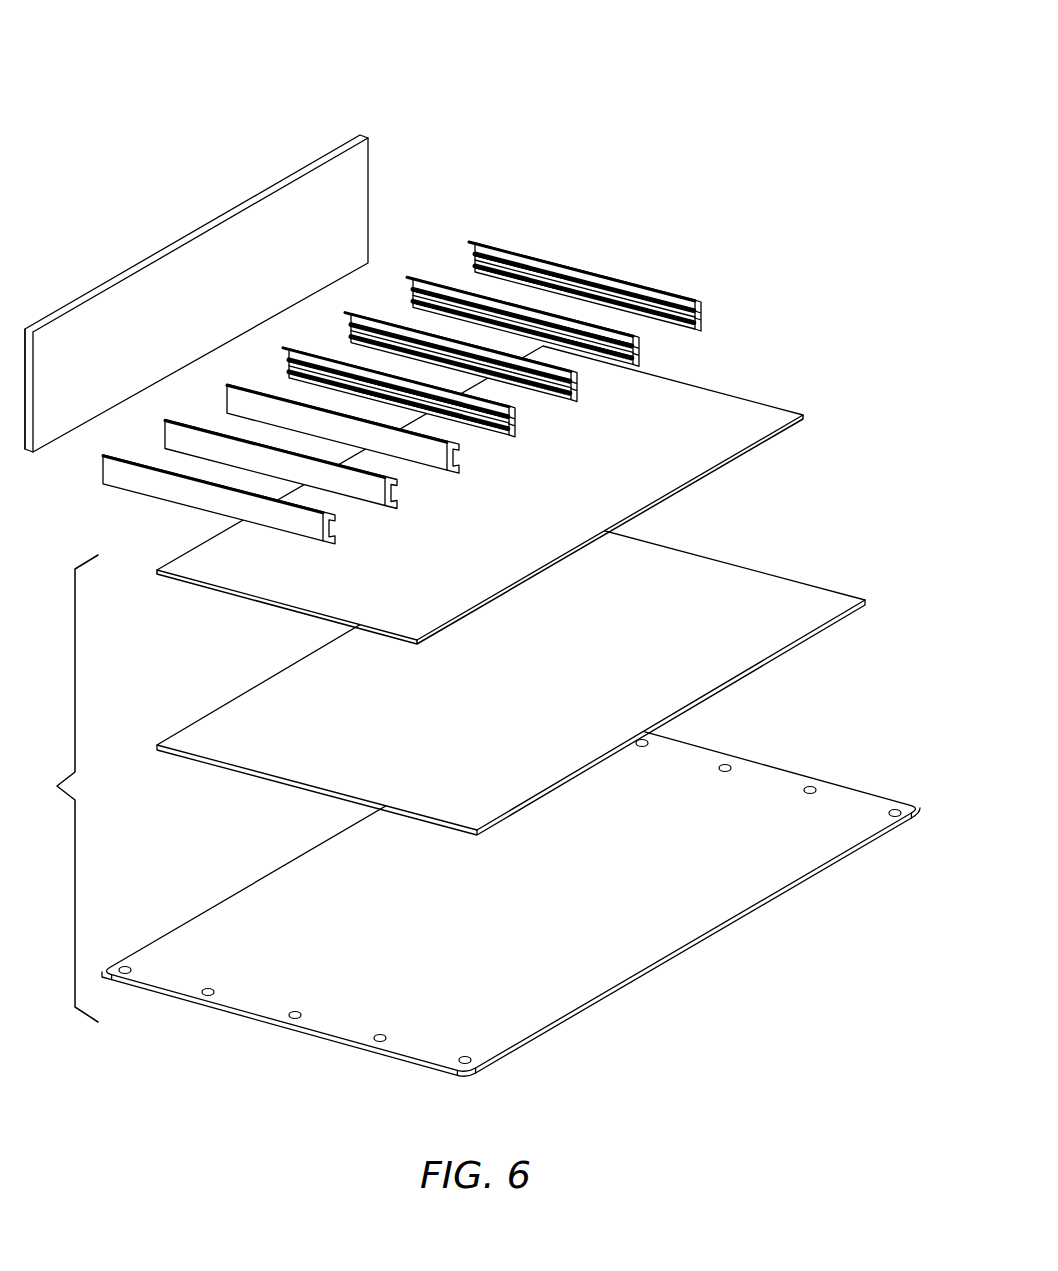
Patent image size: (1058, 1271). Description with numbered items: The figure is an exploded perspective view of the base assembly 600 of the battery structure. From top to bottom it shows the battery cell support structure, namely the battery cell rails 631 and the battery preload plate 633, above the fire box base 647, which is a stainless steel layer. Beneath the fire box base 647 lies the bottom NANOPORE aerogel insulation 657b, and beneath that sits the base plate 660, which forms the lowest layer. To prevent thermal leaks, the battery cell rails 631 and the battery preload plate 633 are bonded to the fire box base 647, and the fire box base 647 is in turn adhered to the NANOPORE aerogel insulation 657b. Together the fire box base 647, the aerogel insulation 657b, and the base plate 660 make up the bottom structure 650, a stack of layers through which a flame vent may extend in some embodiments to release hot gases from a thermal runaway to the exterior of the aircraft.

The base assembly 600 is at (472, 562).
The battery cell rails 631 is at (510, 243).
The battery preload plate 633 is at (318, 187).
The fire box base 647 is at (833, 453).
The bottom structure 650 is at (488, 677).
The bottom NANOPORE aerogel insulation 657b is at (777, 600).
The base plate 660 is at (778, 800).